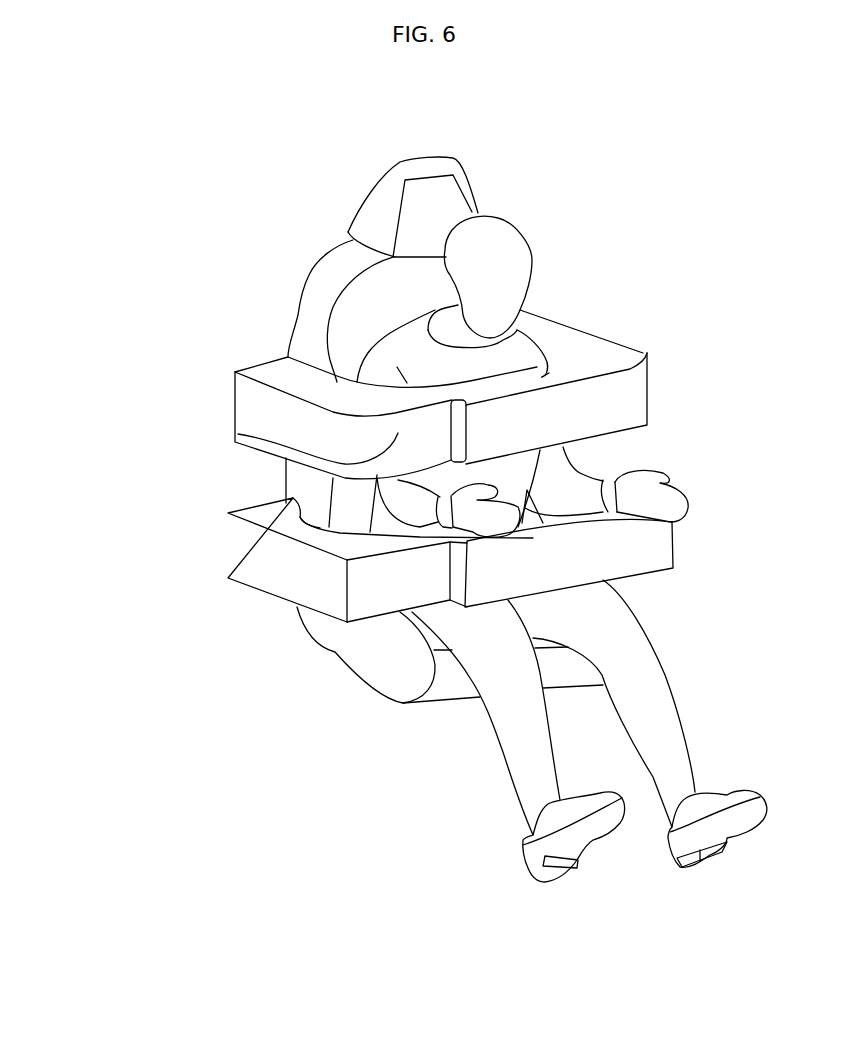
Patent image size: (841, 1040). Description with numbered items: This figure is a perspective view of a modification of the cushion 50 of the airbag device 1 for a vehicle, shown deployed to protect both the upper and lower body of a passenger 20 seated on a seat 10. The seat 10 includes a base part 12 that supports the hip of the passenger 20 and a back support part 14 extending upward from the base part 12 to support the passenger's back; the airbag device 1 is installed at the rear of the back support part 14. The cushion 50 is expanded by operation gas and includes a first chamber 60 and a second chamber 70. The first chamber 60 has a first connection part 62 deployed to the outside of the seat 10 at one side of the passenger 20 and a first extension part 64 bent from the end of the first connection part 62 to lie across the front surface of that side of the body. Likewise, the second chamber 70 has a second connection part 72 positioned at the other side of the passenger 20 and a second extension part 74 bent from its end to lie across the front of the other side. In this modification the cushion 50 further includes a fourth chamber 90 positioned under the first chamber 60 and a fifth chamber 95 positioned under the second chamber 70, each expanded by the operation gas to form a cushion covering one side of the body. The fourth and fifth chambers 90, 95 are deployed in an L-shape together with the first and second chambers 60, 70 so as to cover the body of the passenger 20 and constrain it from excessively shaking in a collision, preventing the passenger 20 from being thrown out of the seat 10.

The airbag device 1 is at (172, 494).
The seat 10 is at (303, 227).
The base part 12 is at (387, 667).
The back support part 14 is at (312, 300).
The passenger 20 is at (607, 613).
The cushion 50 is at (246, 468).
The first chamber 60 is at (135, 376).
The first connection part 62 is at (292, 378).
The first extension part 64 is at (238, 434).
The second chamber 70 is at (617, 258).
The second connection part 72 is at (565, 330).
The second extension part 74 is at (560, 418).
The fourth chamber 90 is at (272, 572).
The fifth chamber 95 is at (657, 551).